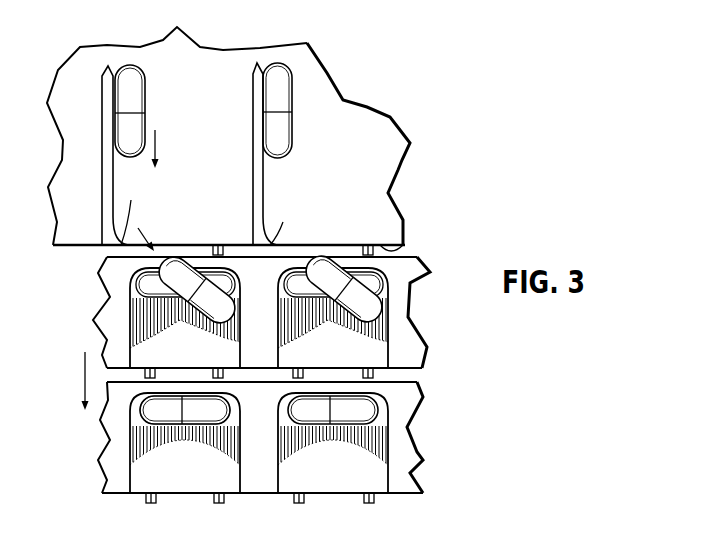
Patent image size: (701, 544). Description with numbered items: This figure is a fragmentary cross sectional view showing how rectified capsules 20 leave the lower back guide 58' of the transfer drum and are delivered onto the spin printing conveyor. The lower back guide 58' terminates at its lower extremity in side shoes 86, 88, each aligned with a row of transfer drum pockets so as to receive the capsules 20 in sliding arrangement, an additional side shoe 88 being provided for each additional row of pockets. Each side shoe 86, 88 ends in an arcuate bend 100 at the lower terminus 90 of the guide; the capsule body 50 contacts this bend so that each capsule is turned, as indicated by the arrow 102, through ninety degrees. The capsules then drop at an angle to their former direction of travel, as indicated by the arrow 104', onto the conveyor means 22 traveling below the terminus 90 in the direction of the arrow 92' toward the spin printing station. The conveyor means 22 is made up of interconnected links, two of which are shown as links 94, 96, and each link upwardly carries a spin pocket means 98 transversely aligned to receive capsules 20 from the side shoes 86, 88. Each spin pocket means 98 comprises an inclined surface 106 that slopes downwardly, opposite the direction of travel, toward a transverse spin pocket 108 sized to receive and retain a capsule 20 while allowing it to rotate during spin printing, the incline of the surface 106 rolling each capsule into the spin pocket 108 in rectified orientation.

The lower back guide 58' is at (228, 128).
The capsule 20 is at (145, 90).
The capsule body 50 is at (140, 123).
The arrow 104' is at (186, 149).
The side shoe 86 is at (108, 170).
The side shoe 88 is at (263, 190).
The arcuate bend 100 is at (126, 212).
The arrow 102 is at (138, 228).
The lower terminus 90 is at (405, 242).
The link 94 is at (403, 290).
The inclined surface 106 is at (137, 340).
The spin pocket means 98 is at (127, 315).
The arrow 92' is at (65, 381).
The spin pocket 108 is at (133, 417).
The conveyor means 22 is at (140, 504).
The link 96 is at (413, 425).